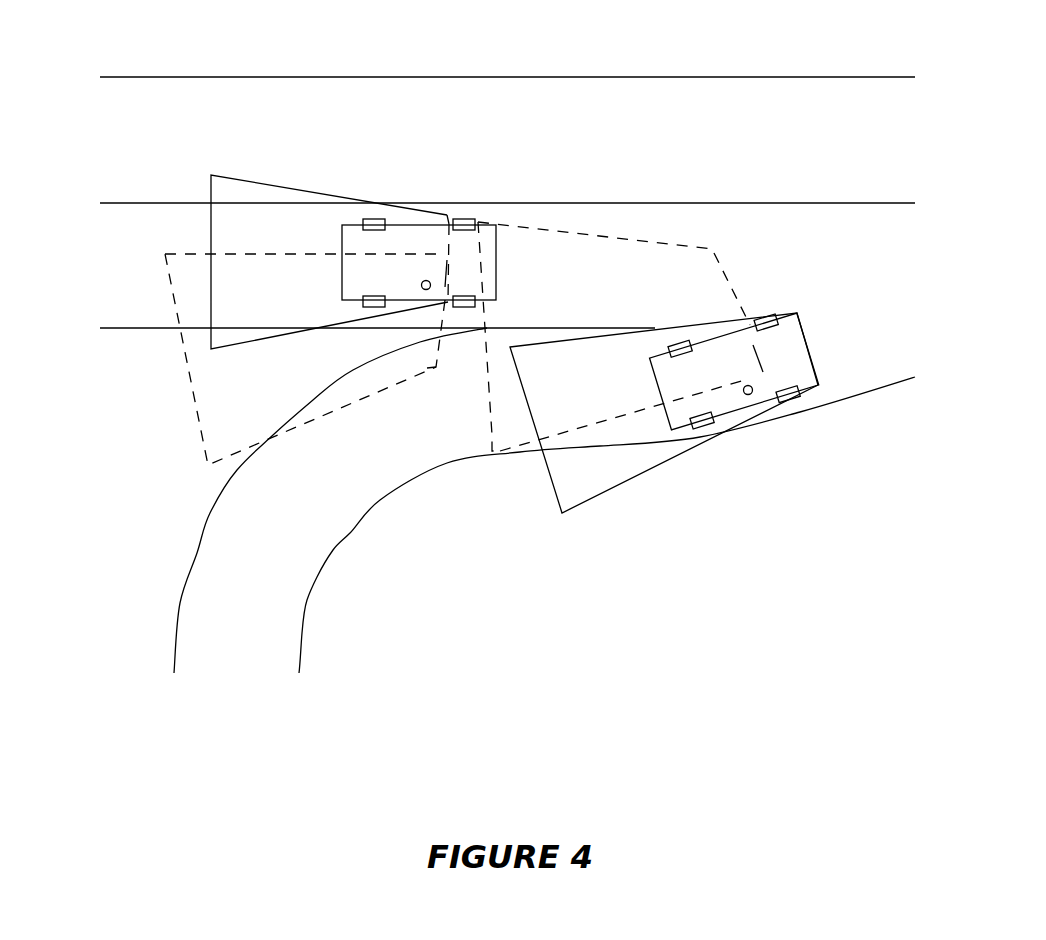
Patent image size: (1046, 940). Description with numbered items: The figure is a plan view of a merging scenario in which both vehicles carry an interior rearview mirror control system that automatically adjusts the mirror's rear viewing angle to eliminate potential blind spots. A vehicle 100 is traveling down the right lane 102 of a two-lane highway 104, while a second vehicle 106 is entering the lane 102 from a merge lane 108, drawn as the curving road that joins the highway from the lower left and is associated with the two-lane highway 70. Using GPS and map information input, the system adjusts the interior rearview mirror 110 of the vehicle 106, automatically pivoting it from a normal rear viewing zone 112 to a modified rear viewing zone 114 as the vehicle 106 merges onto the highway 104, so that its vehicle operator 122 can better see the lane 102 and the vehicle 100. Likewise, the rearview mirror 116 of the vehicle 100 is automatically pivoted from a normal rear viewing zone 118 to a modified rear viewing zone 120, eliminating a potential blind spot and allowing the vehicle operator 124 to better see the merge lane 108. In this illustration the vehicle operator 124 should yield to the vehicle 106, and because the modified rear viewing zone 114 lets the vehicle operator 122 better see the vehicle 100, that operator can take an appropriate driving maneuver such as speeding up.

The two-lane highway 70 is at (179, 610).
The vehicle 100 is at (497, 260).
The right lane 102 is at (124, 262).
The two-lane highway 104 is at (522, 77).
The vehicle 106 is at (807, 343).
The merge lane 108 is at (233, 645).
The interior rearview mirror 110 is at (760, 372).
The normal rear viewing zone 112 is at (548, 478).
The modified rear viewing zone 114 is at (492, 435).
The rearview mirror 116 is at (447, 260).
The normal rear viewing zone 118 is at (210, 218).
The modified rear viewing zone 120 is at (307, 422).
The vehicle operator 122 is at (746, 394).
The vehicle operator 124 is at (422, 290).